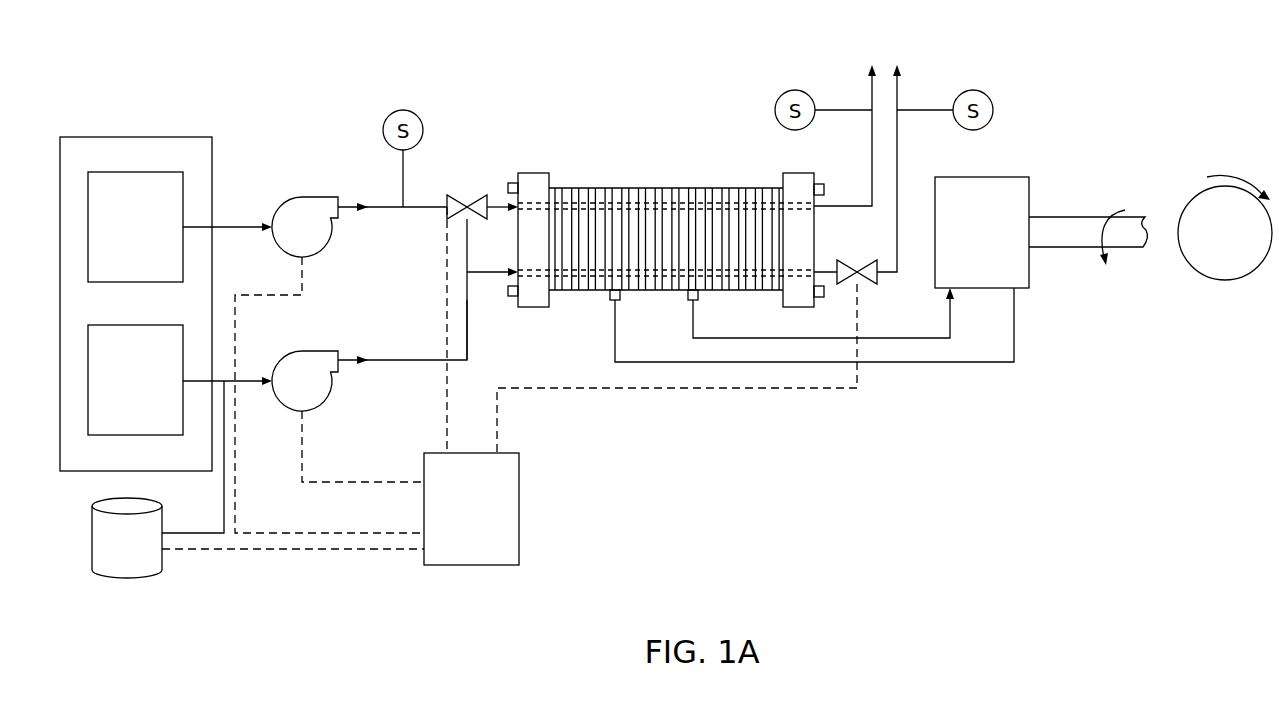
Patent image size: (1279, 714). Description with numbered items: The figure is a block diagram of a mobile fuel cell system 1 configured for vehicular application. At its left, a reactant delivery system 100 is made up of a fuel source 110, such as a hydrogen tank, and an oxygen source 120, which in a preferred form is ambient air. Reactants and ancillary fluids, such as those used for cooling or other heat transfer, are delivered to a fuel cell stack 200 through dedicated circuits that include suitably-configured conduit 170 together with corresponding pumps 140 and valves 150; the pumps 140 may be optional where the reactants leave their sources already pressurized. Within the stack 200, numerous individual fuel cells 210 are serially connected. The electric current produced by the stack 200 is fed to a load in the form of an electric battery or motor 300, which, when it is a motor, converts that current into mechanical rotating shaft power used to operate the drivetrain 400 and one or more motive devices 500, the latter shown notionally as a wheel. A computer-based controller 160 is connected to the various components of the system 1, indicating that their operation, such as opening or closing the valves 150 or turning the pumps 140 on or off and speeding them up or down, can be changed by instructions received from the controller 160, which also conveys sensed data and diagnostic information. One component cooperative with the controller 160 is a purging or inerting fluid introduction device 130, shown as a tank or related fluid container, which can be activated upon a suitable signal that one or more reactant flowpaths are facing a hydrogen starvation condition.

The mobile fuel cell system 1 is at (499, 84).
The reactant delivery system 100 is at (119, 116).
The fuel source 110 is at (135, 227).
The oxygen source 120 is at (135, 380).
The purging or inerting fluid introduction device 130 is at (127, 538).
The pump 140 is at (316, 197).
The valve 150 is at (460, 202).
The controller 160 is at (471, 509).
The conduit 170 is at (467, 322).
The fuel cell stack 200 is at (605, 163).
The fuel cell 210 is at (647, 188).
The motor 300 is at (982, 232).
The drivetrain 400 is at (1063, 216).
The motive device 500 is at (1227, 275).